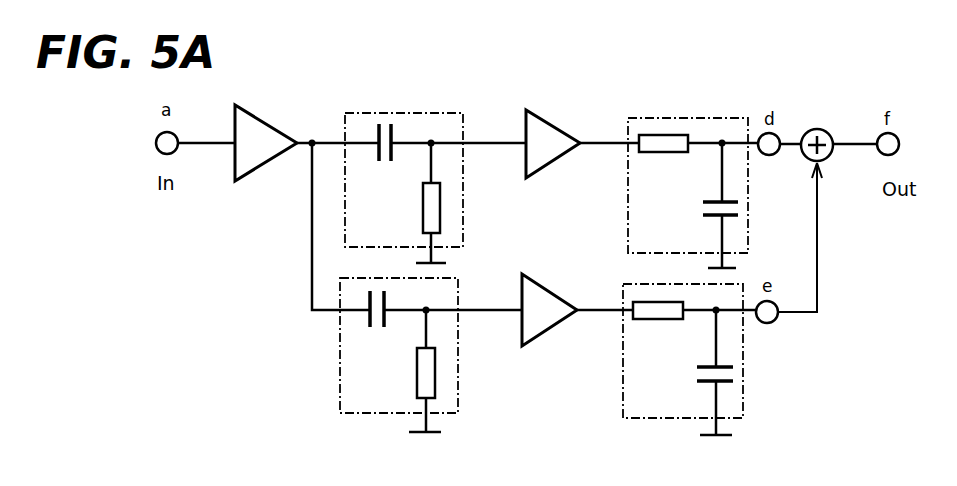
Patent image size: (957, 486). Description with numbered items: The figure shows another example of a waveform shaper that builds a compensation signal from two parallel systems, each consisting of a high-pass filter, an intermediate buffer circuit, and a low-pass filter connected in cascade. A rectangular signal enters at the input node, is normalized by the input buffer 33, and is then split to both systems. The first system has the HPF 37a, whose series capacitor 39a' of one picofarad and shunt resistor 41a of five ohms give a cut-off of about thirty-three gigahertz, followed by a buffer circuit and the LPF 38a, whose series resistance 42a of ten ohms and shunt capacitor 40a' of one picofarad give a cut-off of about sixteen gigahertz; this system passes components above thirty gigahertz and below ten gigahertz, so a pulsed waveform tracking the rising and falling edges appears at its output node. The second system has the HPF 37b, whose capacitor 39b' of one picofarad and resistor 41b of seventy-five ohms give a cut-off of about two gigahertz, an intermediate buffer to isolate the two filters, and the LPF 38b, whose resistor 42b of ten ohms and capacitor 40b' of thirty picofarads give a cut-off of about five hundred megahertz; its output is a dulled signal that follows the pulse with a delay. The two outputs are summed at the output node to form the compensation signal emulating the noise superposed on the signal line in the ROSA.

The input buffer 33 is at (268, 163).
The HPF 37a is at (400, 113).
The HPF 37b is at (388, 415).
The LPF 38a is at (680, 118).
The LPF 38b is at (678, 420).
The capacitor 39a' is at (388, 166).
The capacitor 39b' is at (383, 334).
The capacitor 40a' is at (697, 204).
The capacitor 40b' is at (695, 371).
The resistor 41a is at (442, 207).
The resistor 41b is at (436, 375).
The resistance 42a is at (648, 156).
The resistor 42b is at (655, 322).